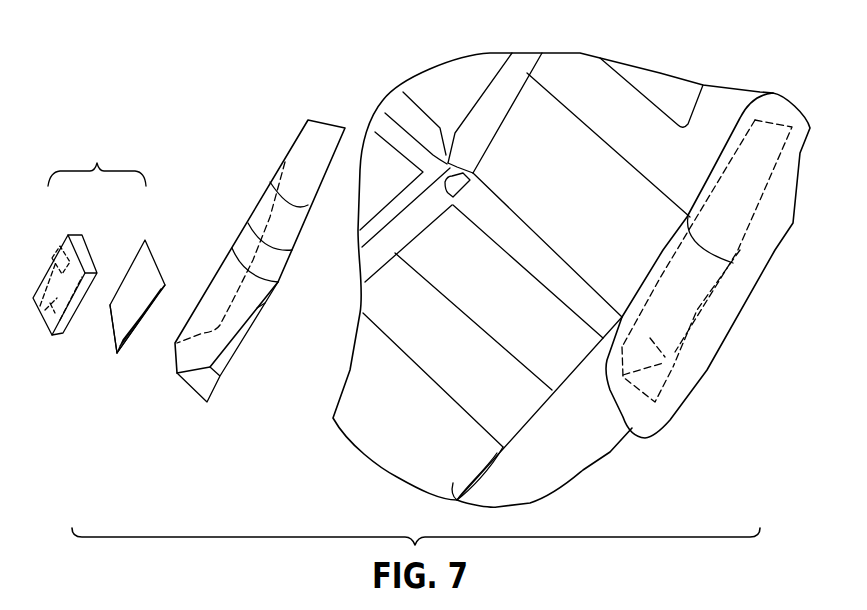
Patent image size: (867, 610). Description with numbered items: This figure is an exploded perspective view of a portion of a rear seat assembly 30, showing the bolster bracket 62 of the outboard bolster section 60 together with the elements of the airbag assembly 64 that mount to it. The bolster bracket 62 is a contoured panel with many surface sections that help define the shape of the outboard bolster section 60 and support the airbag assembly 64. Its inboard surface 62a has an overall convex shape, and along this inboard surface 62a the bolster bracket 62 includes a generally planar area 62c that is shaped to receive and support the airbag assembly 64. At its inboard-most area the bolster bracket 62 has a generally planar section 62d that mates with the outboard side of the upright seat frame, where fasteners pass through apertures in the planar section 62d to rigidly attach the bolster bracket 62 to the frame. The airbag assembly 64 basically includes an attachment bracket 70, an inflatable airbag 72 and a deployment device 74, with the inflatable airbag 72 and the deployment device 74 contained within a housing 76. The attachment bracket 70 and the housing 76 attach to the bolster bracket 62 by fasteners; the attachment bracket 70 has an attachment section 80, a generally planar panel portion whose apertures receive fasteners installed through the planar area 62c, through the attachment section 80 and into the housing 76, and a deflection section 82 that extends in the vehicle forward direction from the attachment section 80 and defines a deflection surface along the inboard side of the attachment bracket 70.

The carrier / backpack 30 is at (672, 54).
The outboard bolster section 60 is at (790, 103).
The bolster bracket 62 is at (325, 120).
The inboard surface 62a is at (248, 242).
The planar area 62c is at (228, 323).
The planar section 62d is at (222, 302).
The airbag assembly 64 is at (97, 162).
The attachment bracket 70 is at (143, 240).
The inflatable airbag 72 is at (43, 320).
The deployment device 74 is at (52, 256).
The housing 76 is at (77, 233).
The attachment section 80 is at (125, 310).
The deflection section 82 is at (135, 335).